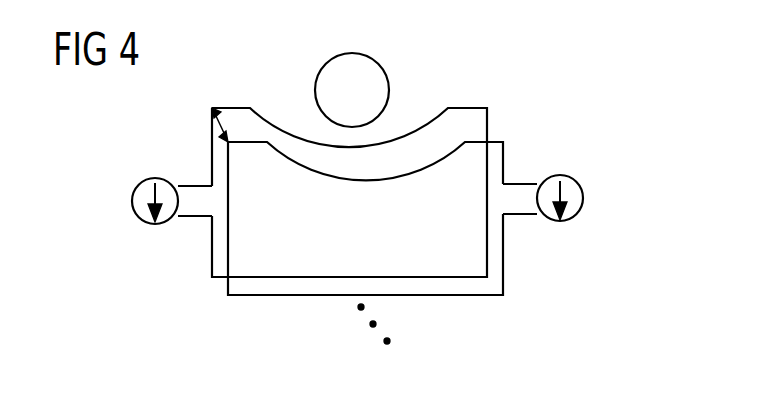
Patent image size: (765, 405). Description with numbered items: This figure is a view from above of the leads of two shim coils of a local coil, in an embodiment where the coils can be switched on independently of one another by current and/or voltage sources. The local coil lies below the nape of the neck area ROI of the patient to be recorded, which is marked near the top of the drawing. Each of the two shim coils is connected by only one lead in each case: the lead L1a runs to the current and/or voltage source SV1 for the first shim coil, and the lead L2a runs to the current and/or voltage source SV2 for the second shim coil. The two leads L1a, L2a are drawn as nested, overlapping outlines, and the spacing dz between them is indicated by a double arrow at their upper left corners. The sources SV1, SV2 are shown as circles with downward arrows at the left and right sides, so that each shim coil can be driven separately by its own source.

The axial offset between lens layers dz is at (230, 128).
The lead L1a is at (465, 108).
The lead L2a is at (493, 142).
The nape of the neck area ROI is at (352, 90).
The current and/or voltage source SV1 is at (132, 197).
The current and/or voltage source SV2 is at (583, 199).